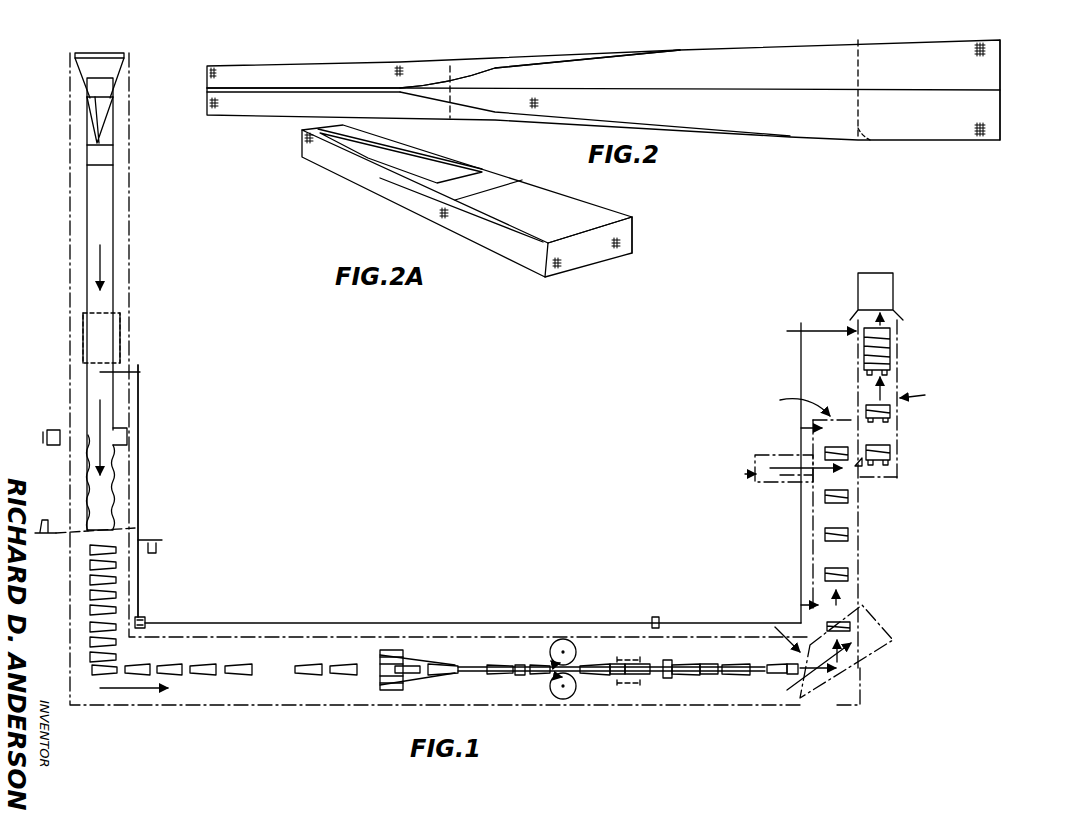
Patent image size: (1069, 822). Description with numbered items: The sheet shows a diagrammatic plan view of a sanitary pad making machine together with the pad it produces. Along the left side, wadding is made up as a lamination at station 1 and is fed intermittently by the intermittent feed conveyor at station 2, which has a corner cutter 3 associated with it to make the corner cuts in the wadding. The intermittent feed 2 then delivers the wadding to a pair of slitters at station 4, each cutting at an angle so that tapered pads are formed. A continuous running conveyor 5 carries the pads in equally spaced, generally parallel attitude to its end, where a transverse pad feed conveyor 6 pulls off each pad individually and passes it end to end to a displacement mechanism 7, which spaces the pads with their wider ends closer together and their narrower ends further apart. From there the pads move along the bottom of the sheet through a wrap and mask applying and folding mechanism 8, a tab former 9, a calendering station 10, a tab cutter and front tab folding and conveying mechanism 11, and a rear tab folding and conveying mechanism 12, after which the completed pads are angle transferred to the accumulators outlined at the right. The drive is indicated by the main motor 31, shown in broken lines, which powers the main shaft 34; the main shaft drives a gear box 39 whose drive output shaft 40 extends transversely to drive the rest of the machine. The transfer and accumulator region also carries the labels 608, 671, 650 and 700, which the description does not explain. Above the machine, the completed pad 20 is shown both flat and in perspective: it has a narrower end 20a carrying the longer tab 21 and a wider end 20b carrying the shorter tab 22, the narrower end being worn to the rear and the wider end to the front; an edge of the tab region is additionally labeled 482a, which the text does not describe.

In FIG. 1, the lamination station 1 is at (140, 145).
In FIG. 1, the intermittent feed conveyor 2 is at (150, 530).
In FIG. 1, the corner cutter 3 is at (163, 410).
In FIG. 1, the slitter station 4 is at (170, 520).
In FIG. 1, the continuous running conveyor 5 is at (68, 543).
In FIG. 1, the transverse pad feed conveyor 6 is at (250, 711).
In FIG. 1, the displacement mechanism 7 is at (387, 711).
In FIG. 1, the wrap and mask applying and folding mechanism 8 is at (510, 711).
In FIG. 1, the tab former 9 is at (605, 711).
In FIG. 1, the calendering station 10 is at (645, 711).
In FIG. 1, the tab cutter and front tab folding and conveying mechanism 11 is at (710, 711).
In FIG. 1, the rear tab folding and conveying mechanism 12 is at (790, 711).
In FIG. 1, the main motor 31 is at (82, 343).
In FIG. 1, the main shaft 34 is at (138, 487).
In FIG. 1, the gear box 39 is at (146, 617).
In FIG. 1, the drive output shaft 40 is at (230, 622).
In FIG. 1, the transfer block 608 is at (655, 617).
In FIG. 1, the transfer conveyor 671 is at (744, 625).
In FIG. 1, the rotary transfer station 650 is at (873, 656).
In FIG. 1, the first accumulator 700 is at (866, 540).
In FIG. 2, the completed pad 20 is at (792, 140).
In FIG. 2A, the completed pad 20 is at (392, 186).
In FIG. 2, the narrower end 20a is at (445, 70).
In FIG. 2, the wider end 20b is at (870, 143).
In FIG. 2A, the wider end 20b is at (625, 235).
In FIG. 2, the longer tab 21 is at (304, 76).
In FIG. 2A, the longer tab 21 is at (445, 168).
In FIG. 2, the shorter tab 22 is at (968, 140).
In FIG. 2A, the shorter tab 22 is at (572, 206).
In FIG. 2, the pad tab edge 482a is at (739, 90).